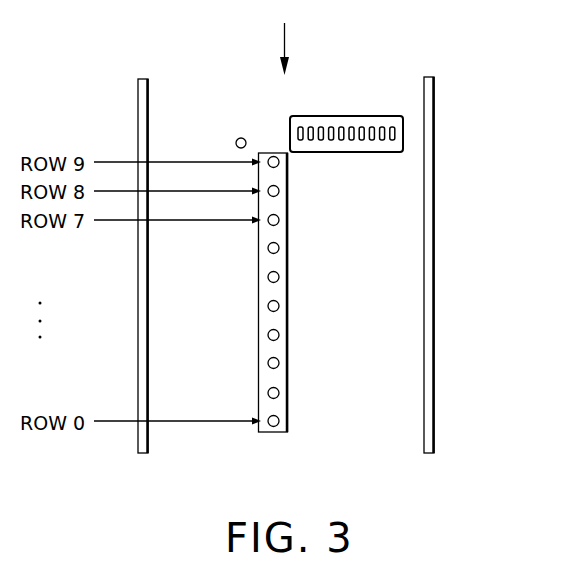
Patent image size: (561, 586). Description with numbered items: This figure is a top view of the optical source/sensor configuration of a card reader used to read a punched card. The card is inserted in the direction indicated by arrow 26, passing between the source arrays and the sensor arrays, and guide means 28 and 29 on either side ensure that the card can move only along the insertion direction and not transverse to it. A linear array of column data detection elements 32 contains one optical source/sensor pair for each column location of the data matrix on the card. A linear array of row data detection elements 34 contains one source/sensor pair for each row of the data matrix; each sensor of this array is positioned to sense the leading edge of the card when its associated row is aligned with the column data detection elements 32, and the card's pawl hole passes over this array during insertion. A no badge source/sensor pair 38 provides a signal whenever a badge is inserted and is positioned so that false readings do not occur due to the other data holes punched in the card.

The arrow 26 is at (286, 43).
The guide means 28 is at (138, 277).
The guide means 29 is at (434, 289).
The column data detection elements 32 is at (365, 115).
The row data detection elements 34 is at (258, 310).
The no badge source/sensor pair 38 is at (237, 139).